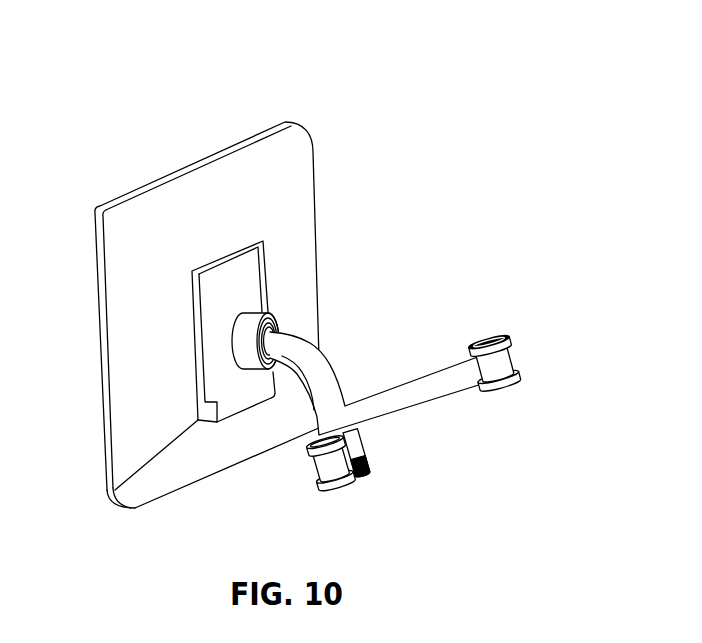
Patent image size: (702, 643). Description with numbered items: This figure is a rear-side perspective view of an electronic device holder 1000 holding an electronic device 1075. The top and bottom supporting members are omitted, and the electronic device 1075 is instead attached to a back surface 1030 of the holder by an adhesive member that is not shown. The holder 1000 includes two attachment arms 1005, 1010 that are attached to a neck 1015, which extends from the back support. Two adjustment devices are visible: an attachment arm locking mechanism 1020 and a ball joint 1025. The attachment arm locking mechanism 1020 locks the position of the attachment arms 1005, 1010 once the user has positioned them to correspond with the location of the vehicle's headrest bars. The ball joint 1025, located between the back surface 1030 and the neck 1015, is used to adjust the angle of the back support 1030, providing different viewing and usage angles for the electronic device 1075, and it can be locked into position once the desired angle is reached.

The electronic device holder 1000 is at (106, 76).
The electronic device 1075 is at (313, 166).
The back surface 1030 is at (114, 490).
The ball joint 1025 is at (273, 313).
The neck 1015 is at (323, 368).
The attachment arm locking mechanism 1020 is at (363, 477).
The attachment arm 1005 is at (323, 490).
The attachment arm 1010 is at (503, 333).